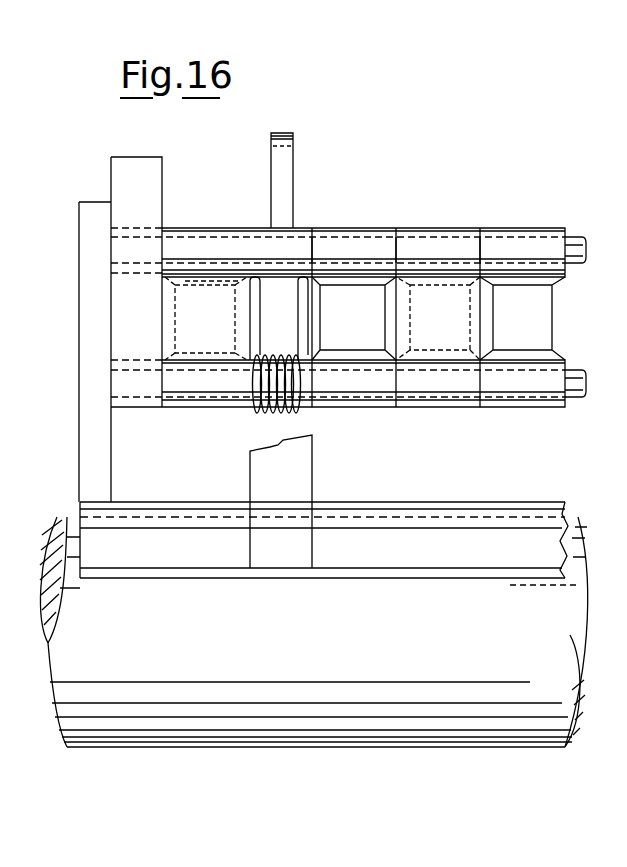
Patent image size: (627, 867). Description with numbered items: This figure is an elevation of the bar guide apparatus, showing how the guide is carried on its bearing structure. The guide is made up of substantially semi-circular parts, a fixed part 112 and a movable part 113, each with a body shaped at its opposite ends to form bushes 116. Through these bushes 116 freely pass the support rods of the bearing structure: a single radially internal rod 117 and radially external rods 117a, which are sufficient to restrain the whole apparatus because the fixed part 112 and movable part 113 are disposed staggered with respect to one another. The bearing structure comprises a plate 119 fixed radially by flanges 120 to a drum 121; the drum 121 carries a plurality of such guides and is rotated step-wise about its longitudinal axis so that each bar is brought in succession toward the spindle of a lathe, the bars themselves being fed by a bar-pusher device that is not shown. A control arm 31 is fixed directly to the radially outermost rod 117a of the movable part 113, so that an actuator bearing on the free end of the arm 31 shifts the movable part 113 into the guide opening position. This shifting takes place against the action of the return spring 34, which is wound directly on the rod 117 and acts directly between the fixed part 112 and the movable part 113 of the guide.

The fixed part 112 is at (198, 226).
The control arm 31 is at (295, 189).
The movable part 113 is at (350, 335).
The bushes 116 is at (405, 237).
The radially external support rod 117a is at (573, 240).
The radially internal support rod 117 is at (573, 373).
The return spring 34 is at (281, 398).
The plate 119 is at (262, 480).
The flanges 120 is at (482, 530).
The drum 121 is at (392, 715).